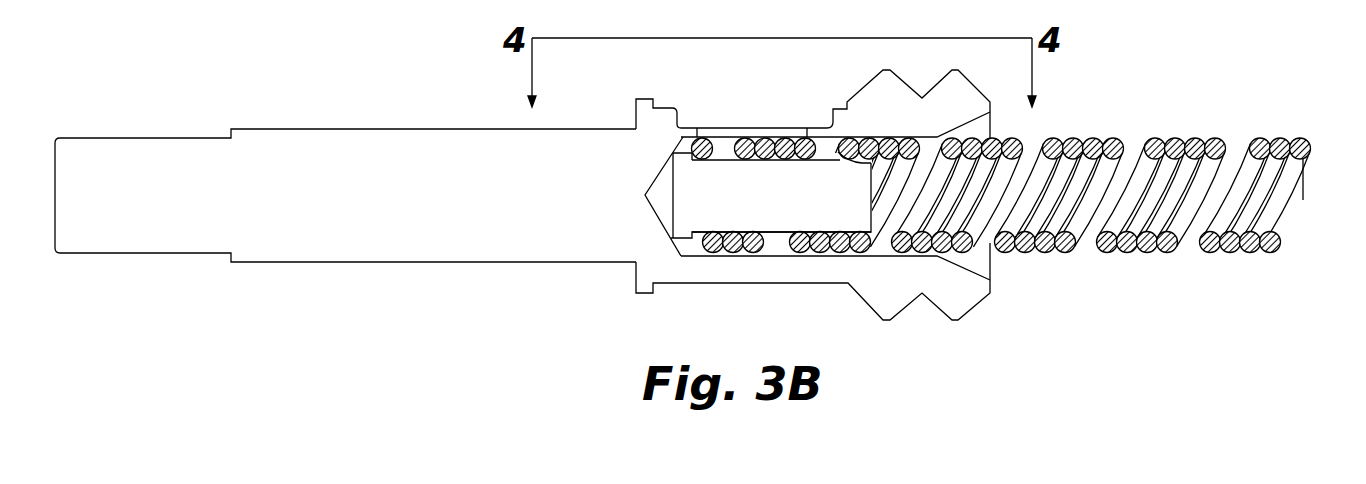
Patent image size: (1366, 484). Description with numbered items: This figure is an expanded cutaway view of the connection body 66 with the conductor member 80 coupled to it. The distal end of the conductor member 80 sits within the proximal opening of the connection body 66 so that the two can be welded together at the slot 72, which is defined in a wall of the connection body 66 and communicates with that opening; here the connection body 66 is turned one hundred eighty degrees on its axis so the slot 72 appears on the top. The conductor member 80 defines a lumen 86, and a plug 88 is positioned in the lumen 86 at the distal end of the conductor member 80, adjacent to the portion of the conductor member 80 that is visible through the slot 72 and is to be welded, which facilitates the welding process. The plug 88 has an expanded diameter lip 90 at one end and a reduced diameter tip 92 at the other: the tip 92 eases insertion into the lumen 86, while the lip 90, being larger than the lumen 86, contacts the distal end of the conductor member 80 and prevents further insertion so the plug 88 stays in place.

The connection body 66 is at (257, 165).
The slot 72 is at (735, 133).
The conductor member 80 is at (1173, 142).
The lumen 86 is at (1073, 208).
The plug 88 is at (787, 218).
The lip 90 is at (684, 150).
The tip 92 is at (856, 172).